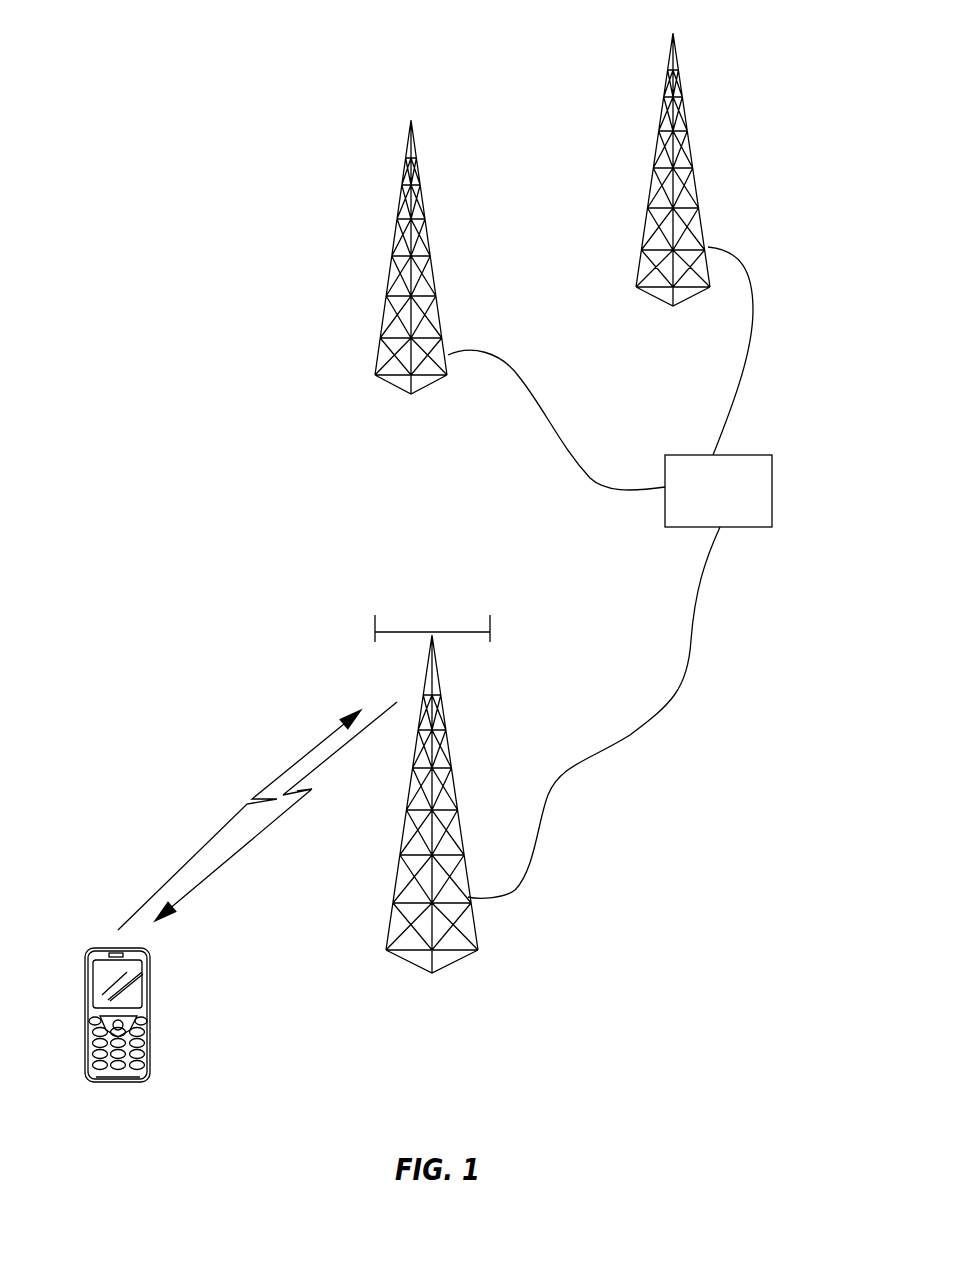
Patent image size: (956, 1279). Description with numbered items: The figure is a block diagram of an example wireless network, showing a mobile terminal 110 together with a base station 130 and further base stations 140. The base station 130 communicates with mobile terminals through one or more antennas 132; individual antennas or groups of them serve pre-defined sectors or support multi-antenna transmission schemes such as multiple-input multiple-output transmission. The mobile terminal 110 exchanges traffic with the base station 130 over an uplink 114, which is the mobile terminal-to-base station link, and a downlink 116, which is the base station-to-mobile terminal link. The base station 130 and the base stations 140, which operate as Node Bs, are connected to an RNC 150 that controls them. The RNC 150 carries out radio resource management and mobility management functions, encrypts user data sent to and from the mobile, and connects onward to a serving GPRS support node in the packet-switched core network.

The mobile terminal 110 is at (150, 1018).
The uplink 114 is at (285, 772).
The downlink 116 is at (232, 857).
The base station 130 is at (475, 932).
The antennas 132 is at (492, 598).
The base station 140 is at (442, 328).
The RNC 150 is at (703, 515).